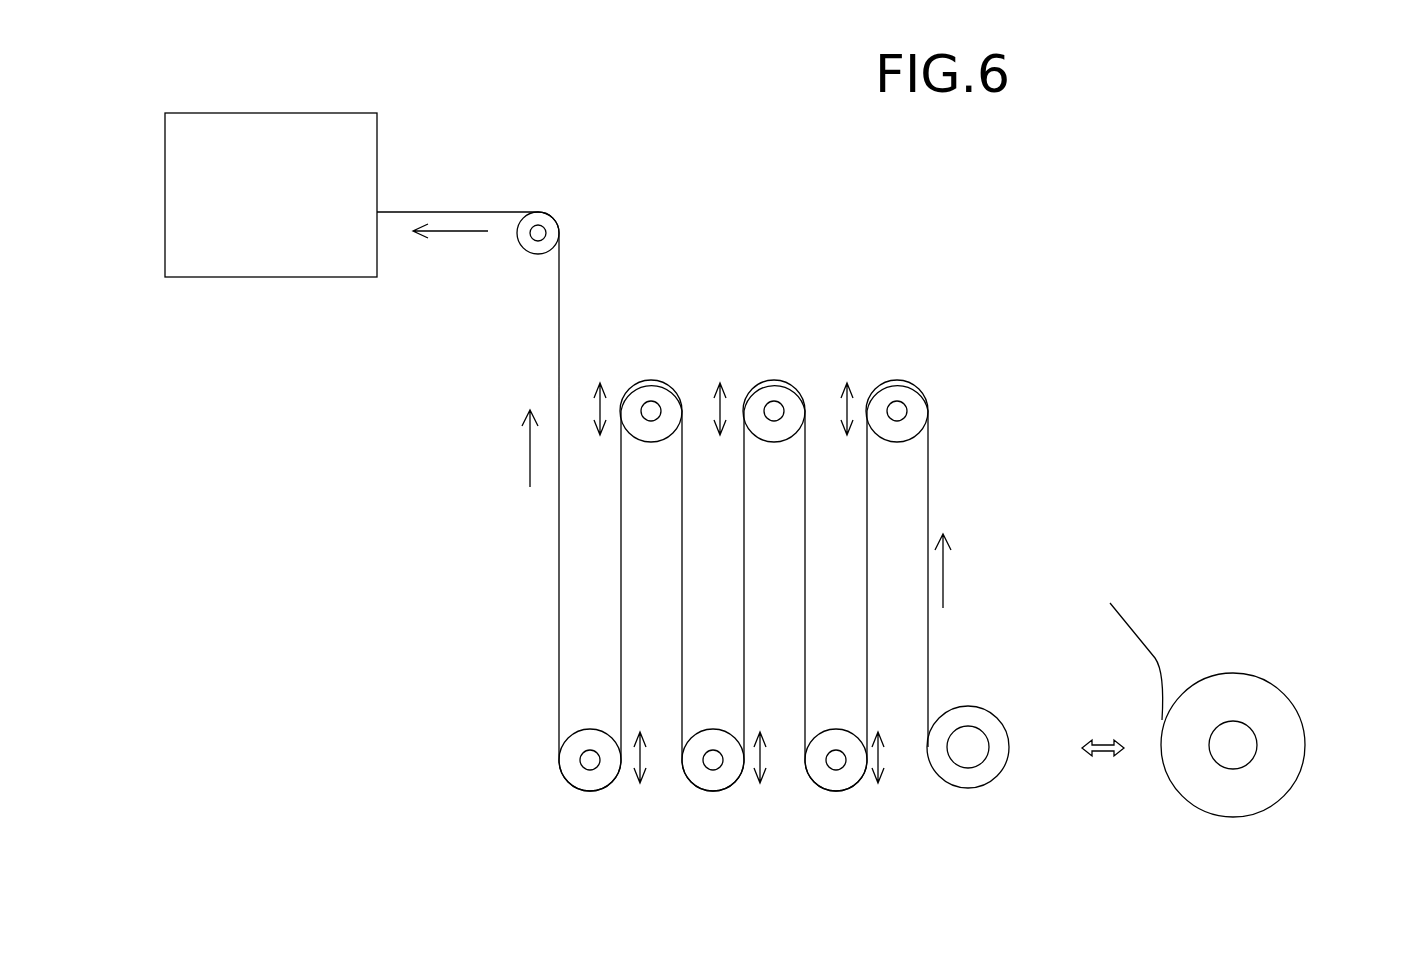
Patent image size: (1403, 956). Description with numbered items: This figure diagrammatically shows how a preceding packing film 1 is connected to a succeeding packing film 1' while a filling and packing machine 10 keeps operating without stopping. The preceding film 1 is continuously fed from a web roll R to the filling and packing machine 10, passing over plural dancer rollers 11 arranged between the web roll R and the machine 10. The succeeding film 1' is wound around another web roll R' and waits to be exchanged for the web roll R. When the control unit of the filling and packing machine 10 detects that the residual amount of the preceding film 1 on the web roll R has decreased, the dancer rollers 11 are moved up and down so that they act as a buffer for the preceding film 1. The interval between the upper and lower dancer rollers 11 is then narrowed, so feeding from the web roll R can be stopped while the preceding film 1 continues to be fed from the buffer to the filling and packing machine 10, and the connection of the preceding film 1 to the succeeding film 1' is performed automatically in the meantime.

The filling and packing machine 10 is at (377, 113).
The preceding film 1 is at (721, 501).
The dancer rollers 11 is at (658, 388).
The web roll R is at (993, 727).
The succeeding film 1' is at (1167, 661).
The web roll R' is at (1248, 731).